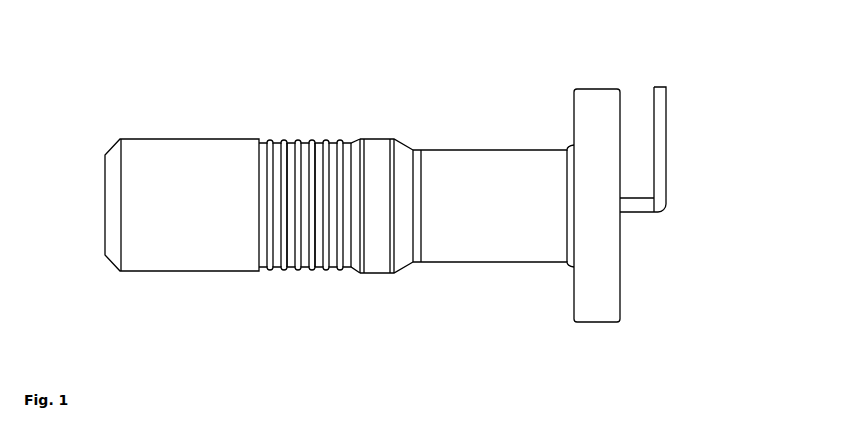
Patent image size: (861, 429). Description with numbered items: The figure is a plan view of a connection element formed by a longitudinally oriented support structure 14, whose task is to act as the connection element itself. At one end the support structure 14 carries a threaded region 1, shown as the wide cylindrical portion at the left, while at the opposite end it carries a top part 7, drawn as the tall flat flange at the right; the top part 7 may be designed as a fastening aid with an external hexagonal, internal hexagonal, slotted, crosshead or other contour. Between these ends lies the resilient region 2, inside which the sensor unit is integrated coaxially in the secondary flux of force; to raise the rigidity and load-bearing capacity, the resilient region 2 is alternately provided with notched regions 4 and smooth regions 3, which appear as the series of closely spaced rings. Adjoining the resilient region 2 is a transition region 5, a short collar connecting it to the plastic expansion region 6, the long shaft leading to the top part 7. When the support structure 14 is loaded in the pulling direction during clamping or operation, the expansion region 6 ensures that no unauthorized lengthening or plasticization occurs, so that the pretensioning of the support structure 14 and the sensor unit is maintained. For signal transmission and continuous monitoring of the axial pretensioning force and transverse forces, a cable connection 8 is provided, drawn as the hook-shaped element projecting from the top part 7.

The threaded region 1 is at (418, 185).
The resilient region 2 is at (347, 159).
The smooth region 3 is at (290, 272).
The notched region 4 is at (320, 270).
The transition region 5 is at (406, 146).
The plastic expansion region 6 is at (470, 263).
The top part 7 is at (597, 105).
The cable connection 8 is at (667, 157).
The support structure 14 is at (162, 249).